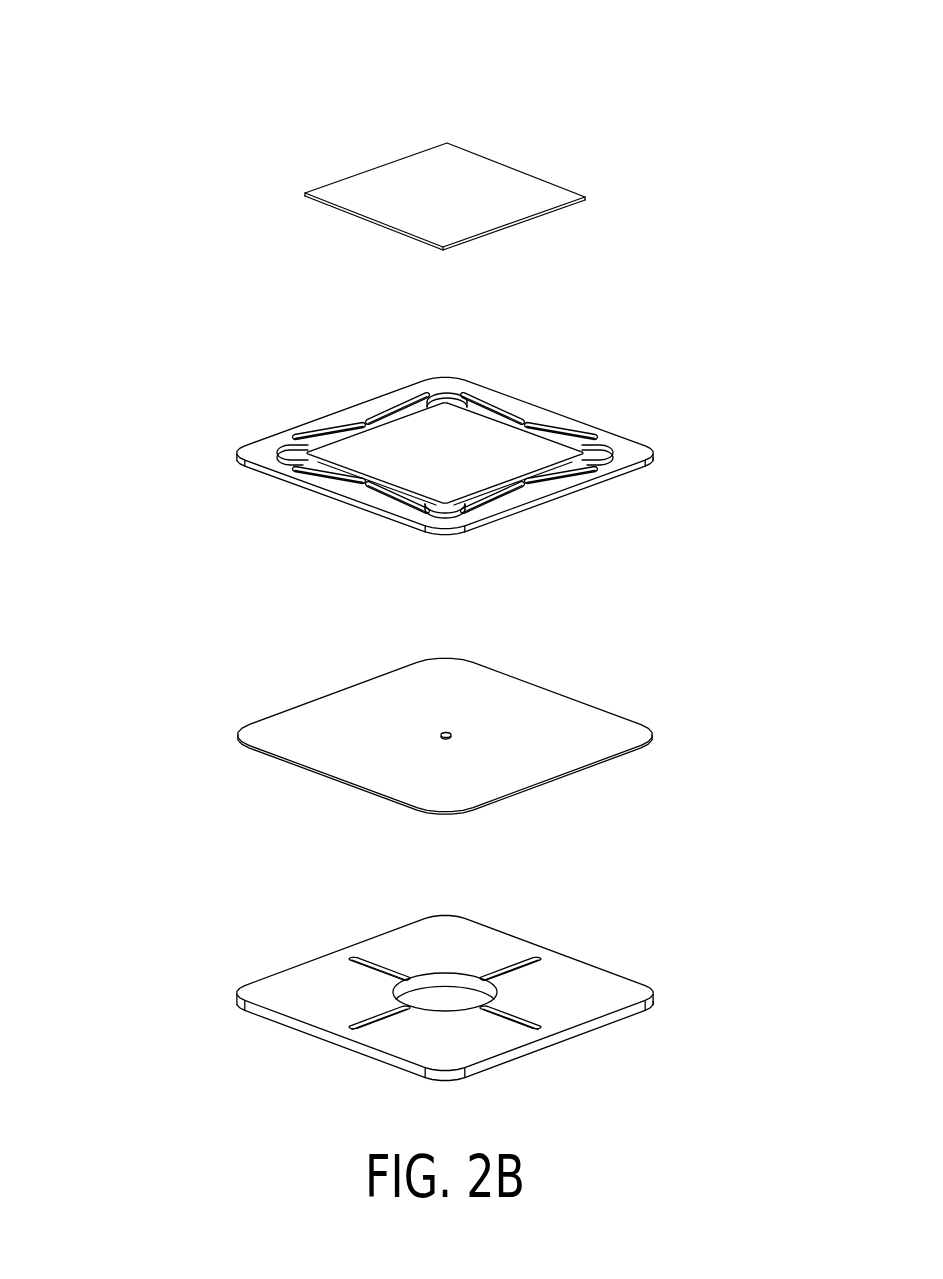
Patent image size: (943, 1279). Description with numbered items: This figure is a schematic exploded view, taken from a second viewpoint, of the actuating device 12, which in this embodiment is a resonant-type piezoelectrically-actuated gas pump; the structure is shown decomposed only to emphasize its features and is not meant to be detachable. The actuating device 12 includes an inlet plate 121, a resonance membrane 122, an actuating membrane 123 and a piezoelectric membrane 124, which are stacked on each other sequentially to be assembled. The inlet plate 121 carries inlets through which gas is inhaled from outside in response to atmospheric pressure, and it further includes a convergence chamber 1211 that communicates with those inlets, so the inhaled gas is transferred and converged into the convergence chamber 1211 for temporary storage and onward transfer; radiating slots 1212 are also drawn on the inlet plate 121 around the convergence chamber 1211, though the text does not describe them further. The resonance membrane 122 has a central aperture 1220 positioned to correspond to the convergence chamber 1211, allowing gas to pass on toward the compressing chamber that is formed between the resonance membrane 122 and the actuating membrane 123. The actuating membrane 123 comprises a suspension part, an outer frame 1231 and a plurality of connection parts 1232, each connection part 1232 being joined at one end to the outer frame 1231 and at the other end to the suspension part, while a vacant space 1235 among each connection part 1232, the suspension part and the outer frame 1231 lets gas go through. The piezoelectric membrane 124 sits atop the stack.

The actuating device 12 is at (667, 55).
The inlet plate 121 is at (272, 993).
The convergence chamber 1211 is at (438, 993).
The radial slots 1212 is at (520, 1018).
The resonance membrane 122 is at (280, 733).
The central aperture 1220 is at (453, 733).
The actuating membrane 123 is at (243, 417).
The outer frame 1231 is at (635, 453).
The connection parts 1232 is at (523, 427).
The vacant space 1235 is at (600, 457).
The piezoelectric membrane 124 is at (383, 187).